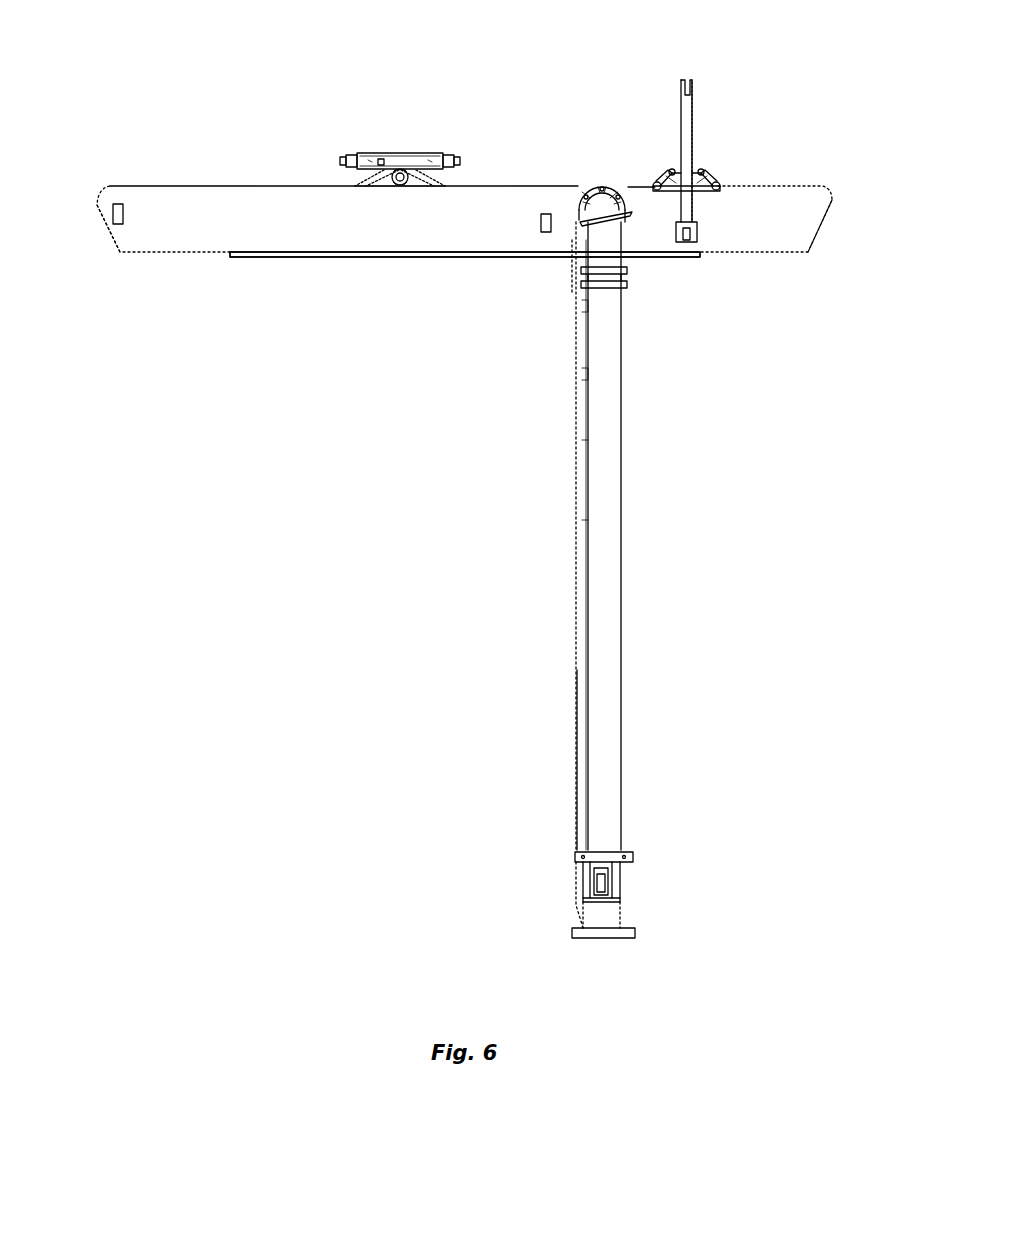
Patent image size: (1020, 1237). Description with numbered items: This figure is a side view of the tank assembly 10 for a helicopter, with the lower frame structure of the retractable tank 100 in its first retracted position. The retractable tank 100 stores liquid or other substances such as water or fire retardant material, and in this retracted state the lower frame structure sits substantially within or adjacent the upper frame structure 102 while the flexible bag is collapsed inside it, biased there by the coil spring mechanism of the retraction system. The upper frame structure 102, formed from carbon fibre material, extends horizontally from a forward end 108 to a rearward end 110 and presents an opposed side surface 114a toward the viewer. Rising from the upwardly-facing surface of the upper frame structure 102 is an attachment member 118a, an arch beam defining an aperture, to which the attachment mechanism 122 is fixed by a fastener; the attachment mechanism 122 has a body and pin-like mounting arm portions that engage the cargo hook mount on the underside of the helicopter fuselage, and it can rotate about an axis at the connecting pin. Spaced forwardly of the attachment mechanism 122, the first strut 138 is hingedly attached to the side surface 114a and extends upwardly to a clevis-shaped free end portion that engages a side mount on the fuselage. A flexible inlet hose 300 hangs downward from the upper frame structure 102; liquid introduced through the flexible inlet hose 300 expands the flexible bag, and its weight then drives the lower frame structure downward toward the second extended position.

The tank assembly 10 is at (128, 63).
The retractable tank 100 is at (195, 186).
The upper frame structure 102 is at (143, 238).
The forward end 108 is at (826, 222).
The rearward end 110 is at (107, 226).
The side surface 114a is at (247, 229).
The attachment member 118a is at (386, 165).
The attachment mechanism 122 is at (402, 154).
The first strut 138 is at (688, 125).
The flexible inlet hose 300 is at (588, 645).